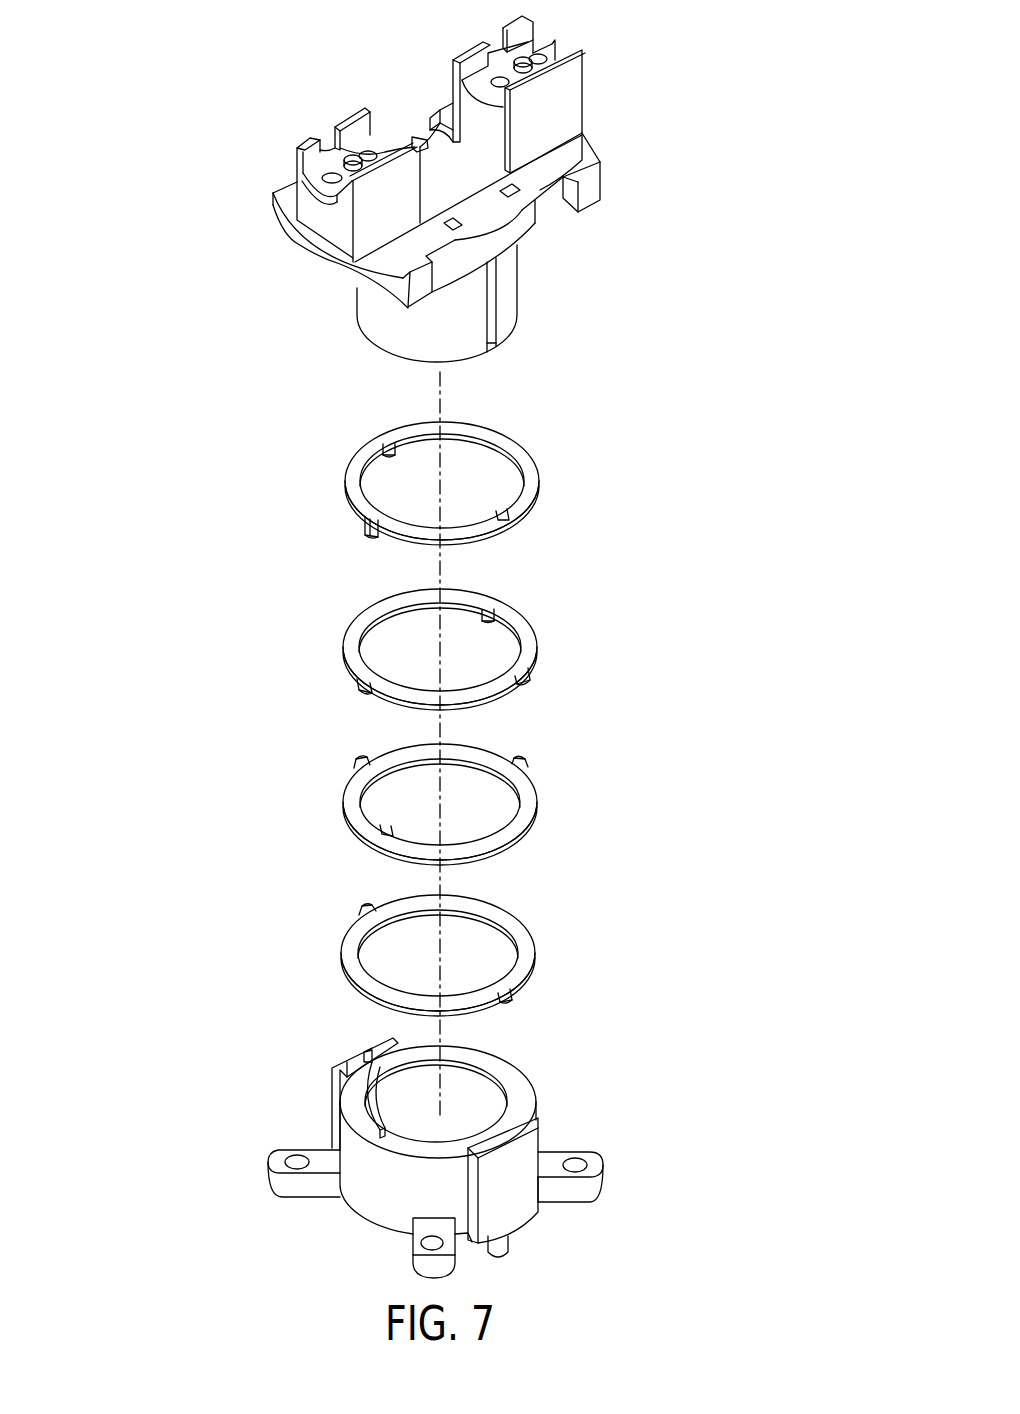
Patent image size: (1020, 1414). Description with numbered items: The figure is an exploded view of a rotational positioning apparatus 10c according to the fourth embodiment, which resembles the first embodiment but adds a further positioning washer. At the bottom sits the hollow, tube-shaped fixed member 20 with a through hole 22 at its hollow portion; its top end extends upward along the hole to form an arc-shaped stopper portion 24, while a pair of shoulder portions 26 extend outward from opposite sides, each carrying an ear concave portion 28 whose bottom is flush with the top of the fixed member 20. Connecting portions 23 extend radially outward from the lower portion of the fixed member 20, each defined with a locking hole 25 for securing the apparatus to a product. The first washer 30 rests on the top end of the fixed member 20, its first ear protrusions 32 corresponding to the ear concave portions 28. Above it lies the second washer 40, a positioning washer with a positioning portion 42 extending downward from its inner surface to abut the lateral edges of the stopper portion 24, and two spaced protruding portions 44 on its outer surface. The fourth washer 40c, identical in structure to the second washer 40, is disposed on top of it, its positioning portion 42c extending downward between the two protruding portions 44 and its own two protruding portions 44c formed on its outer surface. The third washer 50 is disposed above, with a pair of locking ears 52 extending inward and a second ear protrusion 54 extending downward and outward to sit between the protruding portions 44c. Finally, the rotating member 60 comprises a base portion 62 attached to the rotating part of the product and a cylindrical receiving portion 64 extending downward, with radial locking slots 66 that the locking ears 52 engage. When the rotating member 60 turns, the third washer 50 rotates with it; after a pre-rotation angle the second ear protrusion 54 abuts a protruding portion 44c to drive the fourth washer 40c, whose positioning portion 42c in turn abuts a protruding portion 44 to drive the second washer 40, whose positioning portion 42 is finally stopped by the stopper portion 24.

The rotational positioning apparatus 10c is at (217, 31).
The fixed member 20 is at (577, 1210).
The through hole 22 is at (473, 1089).
The connecting portion 23 is at (312, 1187).
The stopper portion 24 is at (363, 1105).
The locking hole 25 is at (295, 1160).
The shoulder portion 26 is at (345, 1067).
The ear concave portion 28 is at (370, 1047).
The first washer 30 is at (503, 900).
The first ear protrusion 32 is at (510, 994).
The second washer 40 is at (540, 777).
The positioning portion 42 is at (390, 830).
The protruding portion 44 is at (520, 762).
The fourth washer 40c is at (550, 630).
The positioning portion 42c is at (492, 606).
The protruding portion 44c is at (528, 680).
The third washer 50 is at (333, 438).
The locking ear 52 is at (390, 443).
The second ear protrusion 54 is at (364, 523).
The rotating member 60 is at (305, 120).
The base portion 62 is at (578, 160).
The receiving portion 64 is at (377, 318).
The locking slot 66 is at (490, 310).